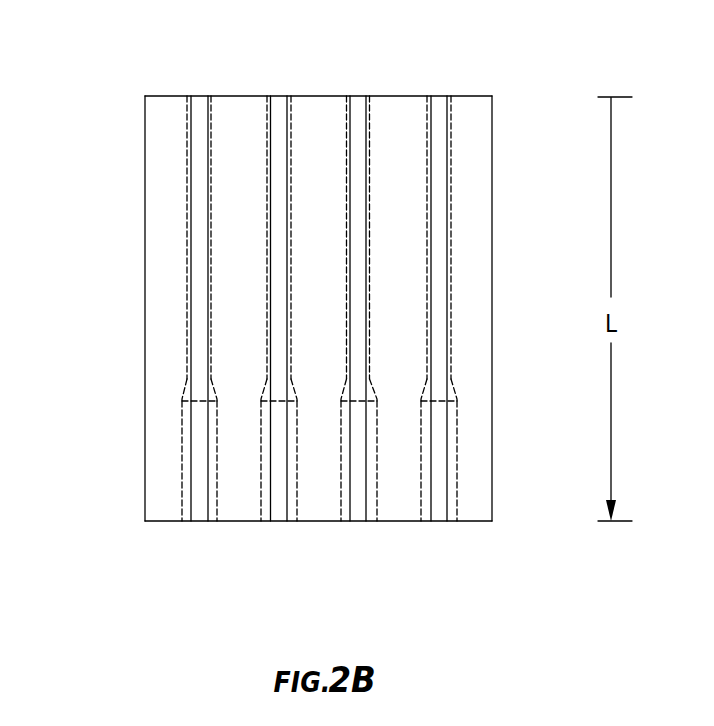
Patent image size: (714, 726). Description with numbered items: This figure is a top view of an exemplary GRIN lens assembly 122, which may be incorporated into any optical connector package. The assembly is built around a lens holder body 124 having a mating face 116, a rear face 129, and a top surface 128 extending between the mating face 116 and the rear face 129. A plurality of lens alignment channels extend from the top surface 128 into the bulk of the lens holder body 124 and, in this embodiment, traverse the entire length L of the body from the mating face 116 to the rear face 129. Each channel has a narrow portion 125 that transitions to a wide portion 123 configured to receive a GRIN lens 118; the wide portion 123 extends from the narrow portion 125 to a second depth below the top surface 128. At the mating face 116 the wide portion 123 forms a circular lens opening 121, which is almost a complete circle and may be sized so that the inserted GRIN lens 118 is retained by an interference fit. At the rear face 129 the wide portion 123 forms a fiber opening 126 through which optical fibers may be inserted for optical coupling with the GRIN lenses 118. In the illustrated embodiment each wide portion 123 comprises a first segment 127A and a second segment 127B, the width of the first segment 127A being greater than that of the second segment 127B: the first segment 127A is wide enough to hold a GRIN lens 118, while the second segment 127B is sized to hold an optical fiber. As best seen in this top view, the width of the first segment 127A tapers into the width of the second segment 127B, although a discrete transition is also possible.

The mating face 116 is at (473, 522).
The GRIN lens 118 is at (185, 521).
The circular lens opening 121 is at (212, 521).
The GRIN lens assembly 122 is at (107, 80).
The wide portion 123 is at (318, 368).
The lens holder body 124 is at (145, 346).
The narrow portion 125 is at (206, 113).
The fiber opening 126 is at (190, 96).
The first segment 127A is at (319, 509).
The second segment 127B is at (267, 224).
The top surface 128 is at (487, 333).
The rear face 129 is at (473, 96).